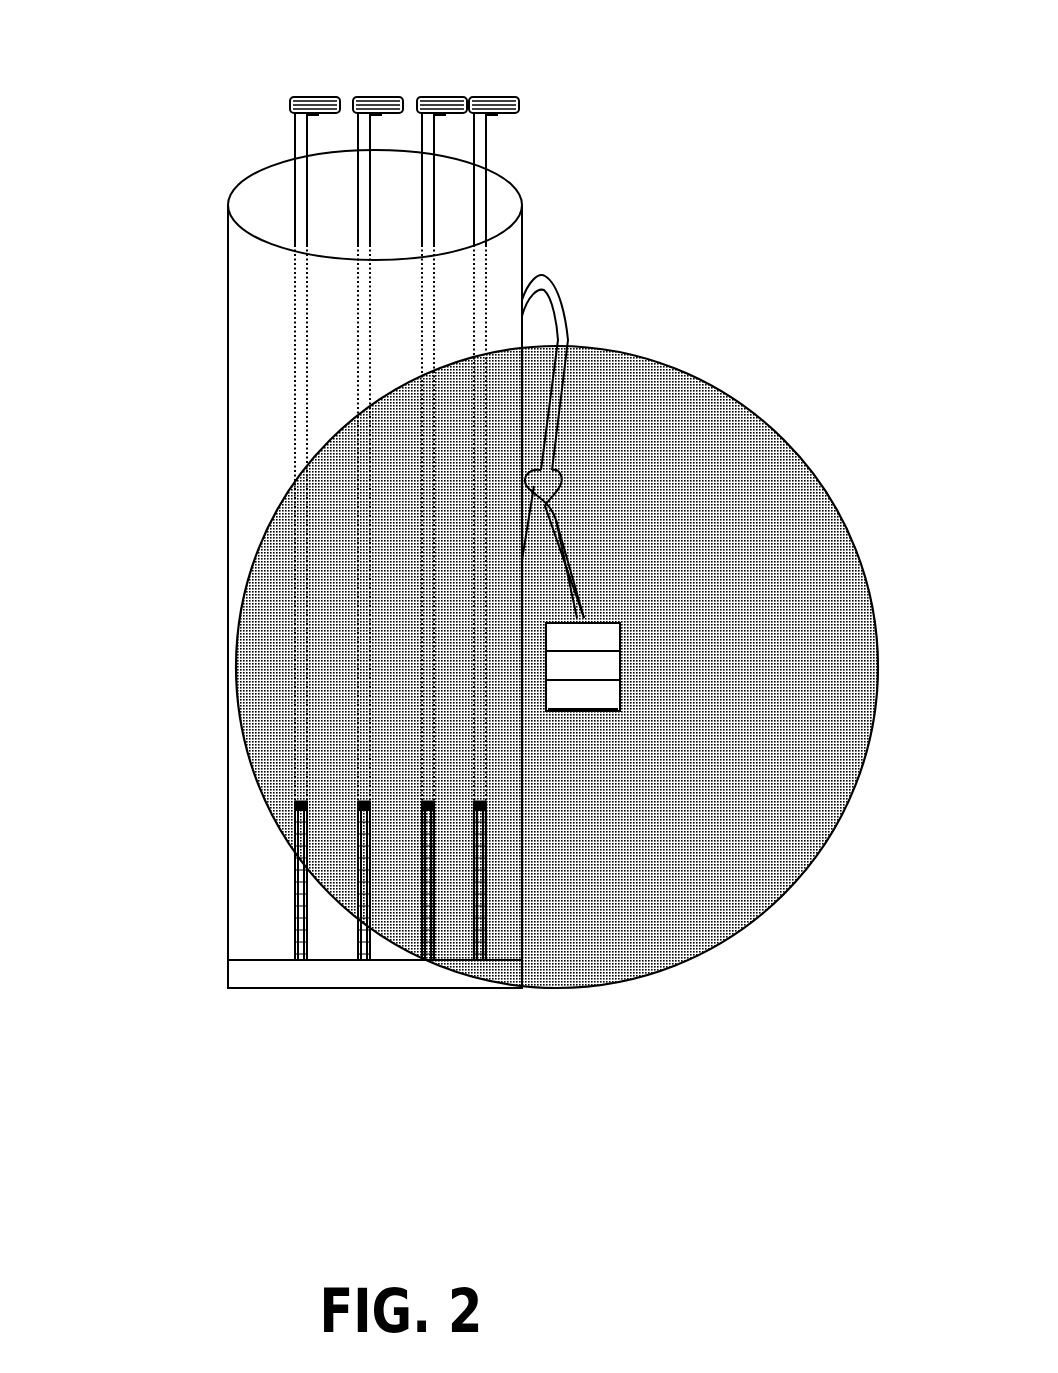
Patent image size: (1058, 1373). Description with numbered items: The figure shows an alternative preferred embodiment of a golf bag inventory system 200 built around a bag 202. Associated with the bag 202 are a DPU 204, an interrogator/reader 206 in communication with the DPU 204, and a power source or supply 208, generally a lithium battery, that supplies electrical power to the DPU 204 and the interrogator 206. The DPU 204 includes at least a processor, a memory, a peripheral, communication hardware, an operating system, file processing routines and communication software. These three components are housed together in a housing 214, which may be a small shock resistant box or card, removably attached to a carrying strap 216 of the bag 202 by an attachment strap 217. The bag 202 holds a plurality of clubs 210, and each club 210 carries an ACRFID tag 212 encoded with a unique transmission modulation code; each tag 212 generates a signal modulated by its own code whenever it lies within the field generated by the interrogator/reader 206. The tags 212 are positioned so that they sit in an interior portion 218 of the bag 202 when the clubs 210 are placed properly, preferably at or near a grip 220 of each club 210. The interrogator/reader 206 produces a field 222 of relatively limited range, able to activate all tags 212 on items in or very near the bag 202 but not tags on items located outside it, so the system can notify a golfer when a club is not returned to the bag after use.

The golf bag inventory system 200 is at (250, 132).
The bag 202 is at (252, 323).
The DPU 204 is at (596, 641).
The interrogator/reader 206 is at (600, 669).
The power source or supply 208 is at (600, 697).
The clubs 210 is at (497, 100).
The ACRFID tag 212 is at (481, 800).
The housing 214 is at (640, 622).
The carrying strap 216 is at (563, 322).
The attachment strap 217 is at (578, 583).
The interior portion 218 is at (268, 724).
The grip 220 is at (485, 858).
The field 222 is at (728, 432).